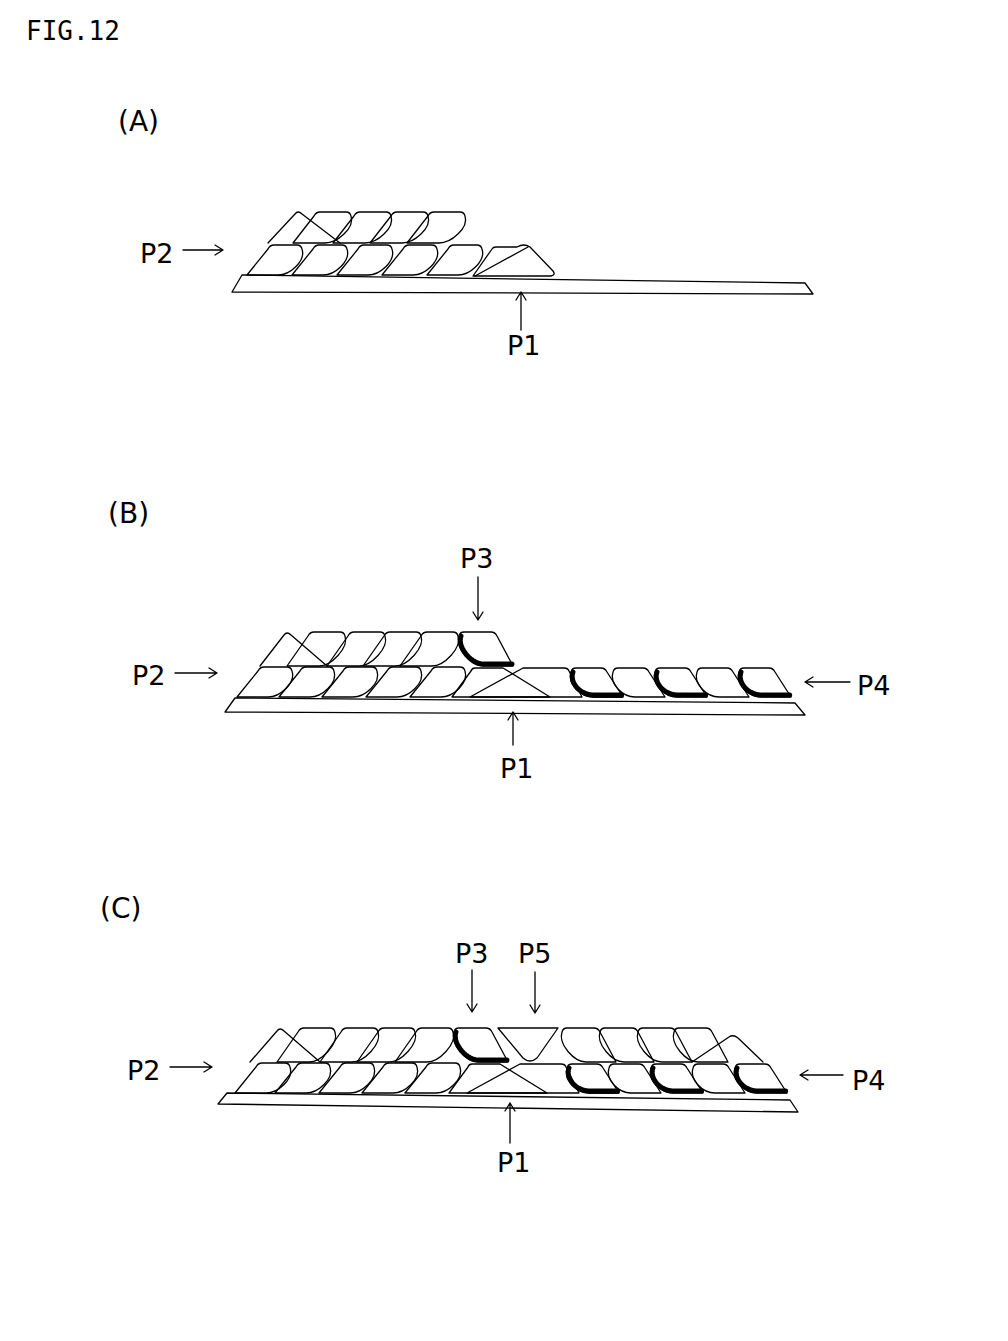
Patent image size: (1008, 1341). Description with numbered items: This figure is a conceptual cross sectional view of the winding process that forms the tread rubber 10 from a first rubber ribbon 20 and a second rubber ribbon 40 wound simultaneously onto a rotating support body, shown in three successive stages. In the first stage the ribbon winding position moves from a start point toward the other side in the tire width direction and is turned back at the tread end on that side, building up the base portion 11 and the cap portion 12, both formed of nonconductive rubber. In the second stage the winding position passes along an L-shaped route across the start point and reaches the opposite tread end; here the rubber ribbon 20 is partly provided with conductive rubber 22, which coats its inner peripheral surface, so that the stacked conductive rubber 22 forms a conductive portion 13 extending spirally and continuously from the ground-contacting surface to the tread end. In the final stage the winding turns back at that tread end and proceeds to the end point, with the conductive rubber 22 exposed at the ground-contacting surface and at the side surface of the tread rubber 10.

The tread rubber 10 is at (307, 1027).
The base portion 11 is at (380, 290).
The cap portion 12 is at (363, 1027).
The conductive portion 13 is at (607, 705).
The first rubber ribbon 20 is at (335, 213).
The conductive rubber 22 is at (460, 633).
The second rubber ribbon 40 is at (292, 213).